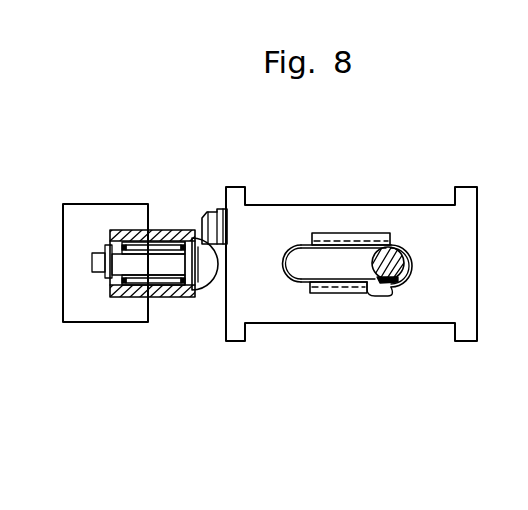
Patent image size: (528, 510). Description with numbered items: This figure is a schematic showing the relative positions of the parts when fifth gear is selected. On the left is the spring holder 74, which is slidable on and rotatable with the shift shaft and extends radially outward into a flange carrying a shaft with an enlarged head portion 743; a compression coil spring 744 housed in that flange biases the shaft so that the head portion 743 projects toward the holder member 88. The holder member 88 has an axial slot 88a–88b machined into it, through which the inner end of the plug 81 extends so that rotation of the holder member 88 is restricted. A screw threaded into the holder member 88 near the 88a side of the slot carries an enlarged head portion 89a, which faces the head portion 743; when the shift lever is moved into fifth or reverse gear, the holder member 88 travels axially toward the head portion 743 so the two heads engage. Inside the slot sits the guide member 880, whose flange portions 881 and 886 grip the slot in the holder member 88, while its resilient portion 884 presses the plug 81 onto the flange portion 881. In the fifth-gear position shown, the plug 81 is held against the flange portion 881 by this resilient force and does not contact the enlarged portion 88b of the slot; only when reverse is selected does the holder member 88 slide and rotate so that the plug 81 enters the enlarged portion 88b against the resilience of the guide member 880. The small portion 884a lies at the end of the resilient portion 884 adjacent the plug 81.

The spring holder 74 is at (103, 313).
The compression coil spring 744 is at (165, 247).
The enlarged head portion 743 is at (213, 290).
The enlarged head portion of screw 89a is at (208, 220).
The holder member 88 is at (263, 310).
The slot side 88a is at (287, 247).
The guide member 880 is at (337, 240).
The flange portion 881 is at (363, 237).
The flange portion 886 is at (333, 292).
The plug 81 is at (402, 247).
The resilient portion 884 is at (408, 287).
The retaining projection 884a is at (388, 290).
The enlarged portion of slot 88b is at (399, 290).